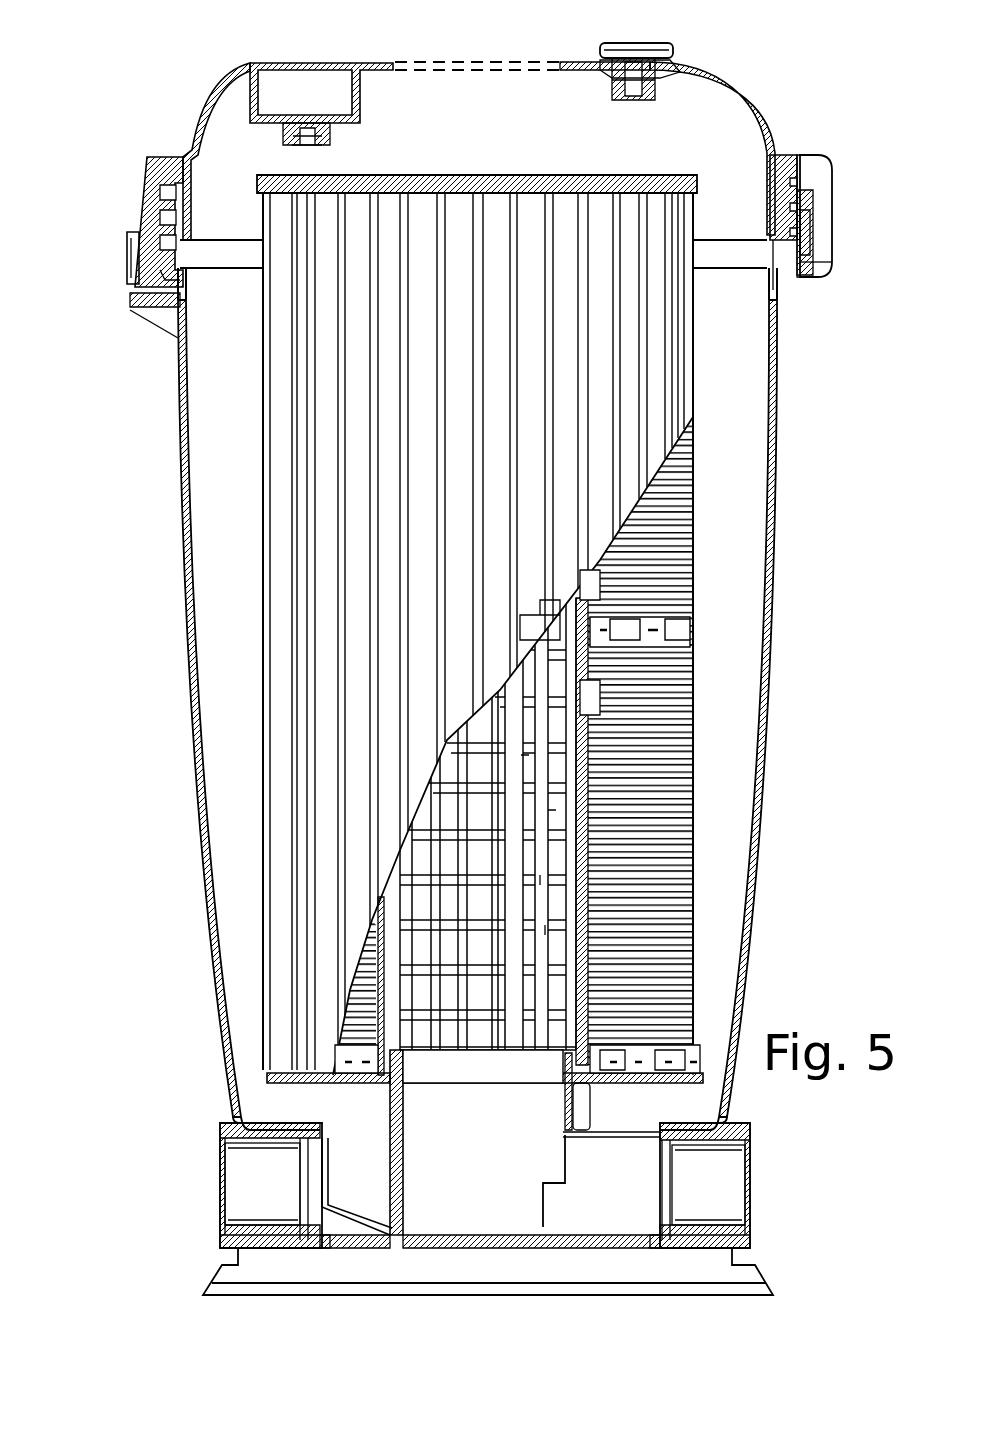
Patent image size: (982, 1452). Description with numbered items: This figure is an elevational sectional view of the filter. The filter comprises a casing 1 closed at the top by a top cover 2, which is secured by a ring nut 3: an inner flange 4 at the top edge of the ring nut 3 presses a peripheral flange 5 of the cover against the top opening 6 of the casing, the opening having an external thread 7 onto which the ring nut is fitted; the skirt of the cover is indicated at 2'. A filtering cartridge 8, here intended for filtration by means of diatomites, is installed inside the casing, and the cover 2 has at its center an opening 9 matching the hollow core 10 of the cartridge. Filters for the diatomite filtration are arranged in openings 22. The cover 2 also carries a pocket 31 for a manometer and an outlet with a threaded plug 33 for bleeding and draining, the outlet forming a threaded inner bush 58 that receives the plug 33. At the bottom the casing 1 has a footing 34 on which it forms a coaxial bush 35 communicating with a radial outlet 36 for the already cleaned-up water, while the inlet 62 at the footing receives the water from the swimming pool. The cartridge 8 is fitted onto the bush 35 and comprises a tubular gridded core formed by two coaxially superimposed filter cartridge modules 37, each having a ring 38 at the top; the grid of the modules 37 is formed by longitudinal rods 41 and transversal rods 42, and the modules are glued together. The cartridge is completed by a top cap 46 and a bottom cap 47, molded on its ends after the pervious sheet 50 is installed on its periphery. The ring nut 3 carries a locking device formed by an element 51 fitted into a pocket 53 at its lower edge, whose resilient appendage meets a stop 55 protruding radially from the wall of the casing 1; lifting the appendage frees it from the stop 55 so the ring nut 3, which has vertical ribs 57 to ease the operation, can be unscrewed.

The casing 1 is at (780, 577).
The top cover 2 is at (505, 141).
The lid skirt 2' is at (838, 273).
The ring nut 3 is at (803, 152).
The inner flange 4 is at (777, 150).
The peripheral flange 5 is at (177, 160).
The top opening 6 is at (793, 187).
The external thread 7 is at (800, 207).
The filtering cartridge 8 is at (705, 497).
The opening 9 is at (453, 60).
The hollow core 10 is at (445, 772).
The openings 22 is at (603, 1087).
The pocket 31 is at (262, 90).
The plug 33 is at (640, 44).
The footing 34 is at (460, 1267).
The coaxial bush 35 is at (397, 1173).
The radial outlet 36 is at (630, 1130).
The filter cartridge modules 37 is at (540, 722).
The ring 38 is at (585, 608).
The longitudinal rods 41 is at (555, 813).
The transversal rods 42 is at (545, 930).
The top cap 46 is at (600, 185).
The bottom cap 47 is at (275, 1078).
The pervious sheet 50 is at (355, 530).
The element 51 is at (133, 290).
The pocket 53 is at (150, 245).
The stop 55 is at (150, 315).
The vertical ribs 57 is at (823, 277).
The threaded inner bush 58 is at (653, 78).
The inlet 62 is at (312, 1160).